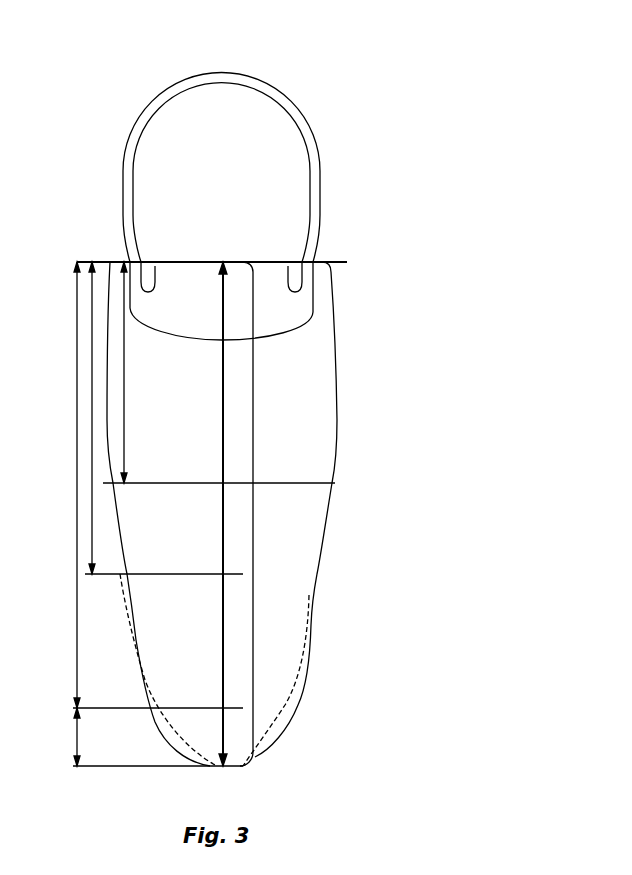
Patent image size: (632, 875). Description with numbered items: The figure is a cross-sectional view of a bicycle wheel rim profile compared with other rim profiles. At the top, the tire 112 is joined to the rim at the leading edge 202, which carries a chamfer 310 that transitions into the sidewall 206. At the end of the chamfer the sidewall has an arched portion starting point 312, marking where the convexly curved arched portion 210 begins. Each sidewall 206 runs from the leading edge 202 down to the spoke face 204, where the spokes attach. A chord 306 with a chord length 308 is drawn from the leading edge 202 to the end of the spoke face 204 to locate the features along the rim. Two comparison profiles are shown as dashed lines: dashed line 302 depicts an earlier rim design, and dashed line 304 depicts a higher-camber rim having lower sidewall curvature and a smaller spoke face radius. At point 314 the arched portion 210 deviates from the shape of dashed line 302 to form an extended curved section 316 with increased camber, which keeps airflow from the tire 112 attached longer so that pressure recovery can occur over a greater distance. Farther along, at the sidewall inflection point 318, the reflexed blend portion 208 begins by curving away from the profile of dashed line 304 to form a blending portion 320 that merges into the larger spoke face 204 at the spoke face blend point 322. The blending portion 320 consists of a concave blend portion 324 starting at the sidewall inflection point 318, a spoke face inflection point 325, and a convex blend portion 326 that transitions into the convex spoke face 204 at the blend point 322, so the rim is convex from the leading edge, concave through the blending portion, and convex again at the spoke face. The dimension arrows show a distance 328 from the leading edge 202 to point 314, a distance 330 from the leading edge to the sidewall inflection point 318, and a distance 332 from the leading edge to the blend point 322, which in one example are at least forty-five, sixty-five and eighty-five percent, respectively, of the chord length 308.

The tire 112 is at (275, 97).
The leading edge 202 is at (115, 262).
The spoke face 204 is at (258, 743).
The sidewall 206 is at (337, 345).
The reflexed blend portion 208 is at (308, 636).
The arched portion 210 is at (335, 297).
The dashed line 302 is at (117, 533).
The dashed line 304 is at (160, 697).
The chord 306 is at (222, 412).
The chord length 308 is at (253, 494).
The chamfer 310 is at (316, 262).
The arched portion starting point 312 is at (106, 257).
The point 314 is at (100, 474).
The extended curved section 316 is at (118, 521).
The sidewall inflection point 318 is at (128, 572).
The blending portion 320 is at (133, 613).
The spoke face blend point 322 is at (150, 712).
The concave blend portion 324 is at (133, 612).
The spoke face inflection point 325 is at (137, 640).
The convex blend portion 326 is at (138, 660).
The distance 328 is at (124, 384).
The distance 330 is at (92, 328).
The distance 332 is at (77, 355).